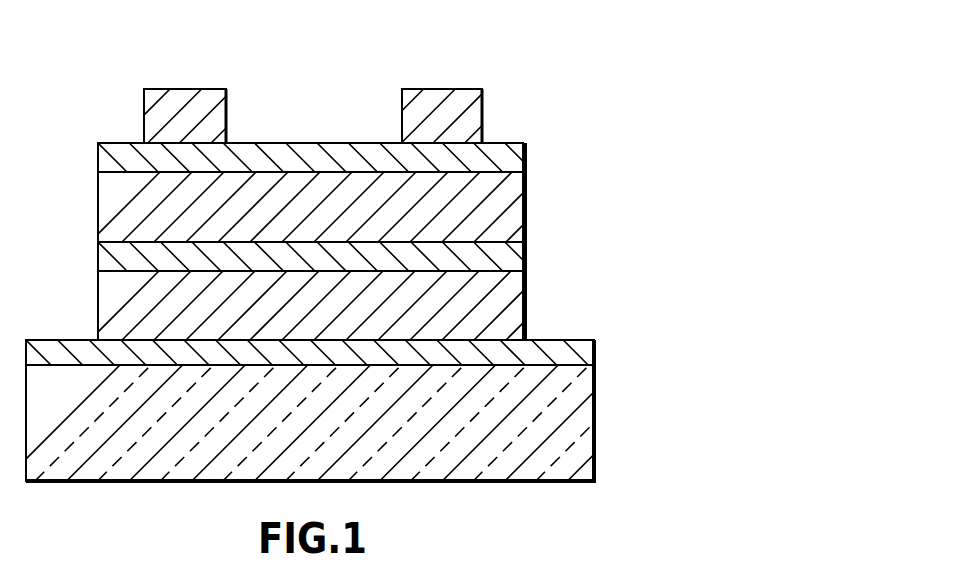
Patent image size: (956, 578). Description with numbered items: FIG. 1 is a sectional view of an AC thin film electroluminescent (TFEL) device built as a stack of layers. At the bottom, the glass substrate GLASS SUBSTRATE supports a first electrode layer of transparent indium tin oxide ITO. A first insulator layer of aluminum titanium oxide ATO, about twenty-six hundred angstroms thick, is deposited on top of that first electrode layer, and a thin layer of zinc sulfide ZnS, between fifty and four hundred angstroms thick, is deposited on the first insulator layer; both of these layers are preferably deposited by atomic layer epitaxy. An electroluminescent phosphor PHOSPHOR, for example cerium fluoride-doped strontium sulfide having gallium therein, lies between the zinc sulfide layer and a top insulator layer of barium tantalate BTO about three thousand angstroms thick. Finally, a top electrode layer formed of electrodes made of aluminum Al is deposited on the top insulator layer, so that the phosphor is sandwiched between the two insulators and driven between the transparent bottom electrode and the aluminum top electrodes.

The aluminum electrodes Al is at (188, 89).
The barium tantalate top insulator layer BTO is at (527, 162).
The electroluminescent phosphor PHOSPHOR is at (527, 207).
The zinc sulfide layer ZnS is at (527, 260).
The aluminum titanium oxide first insulator layer ATO is at (527, 303).
The indium tin oxide first electrode layer ITO is at (597, 353).
The glass substrate GLASS SUBSTRATE is at (597, 415).